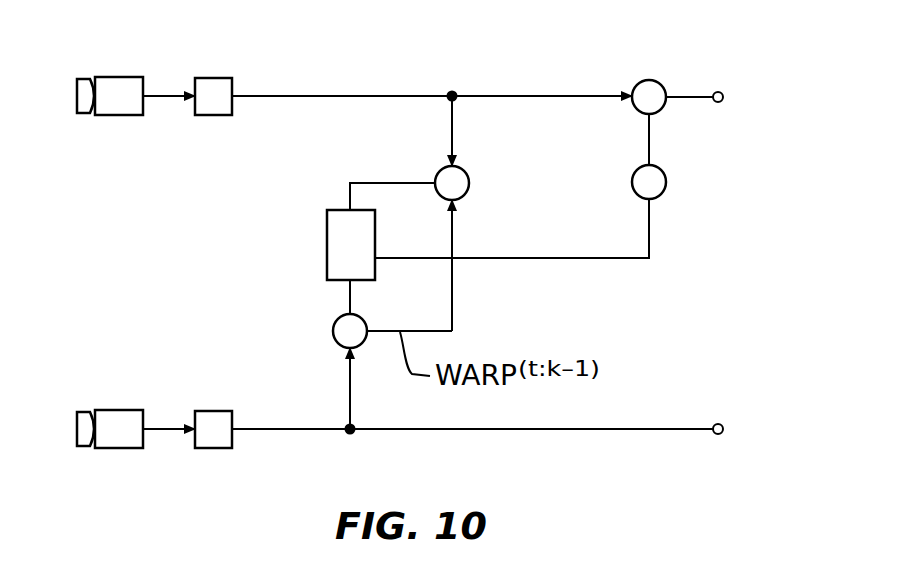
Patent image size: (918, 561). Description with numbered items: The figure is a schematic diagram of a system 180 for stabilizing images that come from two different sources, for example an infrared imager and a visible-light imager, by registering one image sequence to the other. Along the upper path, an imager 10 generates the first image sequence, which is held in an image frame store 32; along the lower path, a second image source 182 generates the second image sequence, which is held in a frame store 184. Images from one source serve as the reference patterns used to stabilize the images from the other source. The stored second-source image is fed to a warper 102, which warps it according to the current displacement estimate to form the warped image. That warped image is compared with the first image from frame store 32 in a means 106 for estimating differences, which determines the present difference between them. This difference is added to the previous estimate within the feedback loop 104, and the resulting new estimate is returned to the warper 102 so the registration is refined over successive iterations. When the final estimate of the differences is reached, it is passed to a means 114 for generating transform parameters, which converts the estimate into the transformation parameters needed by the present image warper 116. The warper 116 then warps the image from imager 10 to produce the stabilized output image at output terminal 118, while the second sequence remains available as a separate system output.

The imager 10 is at (105, 77).
The image frame store 32 is at (215, 78).
The system for stabilizing images from different sources 180 is at (507, 76).
The present image warper 116 is at (652, 80).
The output terminal 118 is at (724, 97).
The means for estimating differences 106 is at (440, 170).
The means for generating transform parameters 114 is at (667, 183).
The feedback loop 104 is at (327, 241).
The prior frame image warper 102 is at (332, 330).
The image source 182 is at (105, 410).
The frame store 184 is at (215, 411).